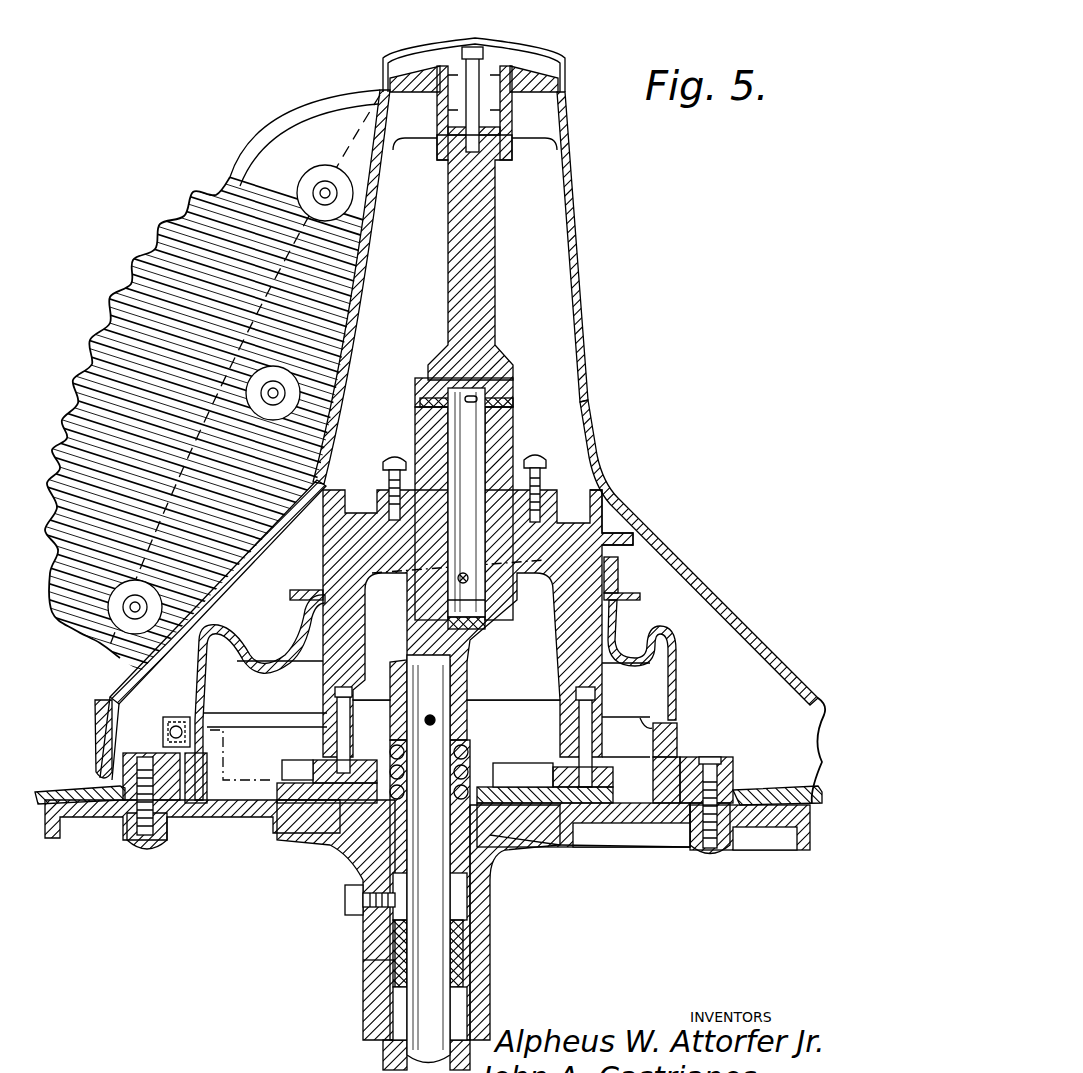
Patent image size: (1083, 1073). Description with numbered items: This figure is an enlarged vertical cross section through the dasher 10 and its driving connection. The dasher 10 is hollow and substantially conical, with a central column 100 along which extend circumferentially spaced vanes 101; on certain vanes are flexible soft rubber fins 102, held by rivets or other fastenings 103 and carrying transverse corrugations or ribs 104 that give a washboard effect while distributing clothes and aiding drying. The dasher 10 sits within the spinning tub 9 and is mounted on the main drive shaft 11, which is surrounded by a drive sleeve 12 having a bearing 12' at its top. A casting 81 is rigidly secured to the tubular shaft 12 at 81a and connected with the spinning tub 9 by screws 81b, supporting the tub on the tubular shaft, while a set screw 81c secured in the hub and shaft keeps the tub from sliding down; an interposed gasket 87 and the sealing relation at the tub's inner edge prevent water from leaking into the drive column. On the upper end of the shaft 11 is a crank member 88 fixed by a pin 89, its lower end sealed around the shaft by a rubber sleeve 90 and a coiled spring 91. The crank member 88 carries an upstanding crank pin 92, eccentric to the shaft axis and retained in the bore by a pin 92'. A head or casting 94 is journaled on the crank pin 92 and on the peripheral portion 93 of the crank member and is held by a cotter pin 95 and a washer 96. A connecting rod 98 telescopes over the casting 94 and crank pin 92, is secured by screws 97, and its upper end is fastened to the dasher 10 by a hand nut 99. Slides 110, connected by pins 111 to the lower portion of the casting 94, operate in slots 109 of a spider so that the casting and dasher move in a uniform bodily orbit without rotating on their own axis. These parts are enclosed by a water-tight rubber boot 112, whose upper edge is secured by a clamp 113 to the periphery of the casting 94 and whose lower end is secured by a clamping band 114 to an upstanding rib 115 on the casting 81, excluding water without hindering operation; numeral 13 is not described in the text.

The spinning tub 9 is at (48, 790).
The dasher 10 is at (748, 592).
The main drive shaft 11 is at (420, 850).
The drive sleeve 12 is at (297, 536).
The bearing 12' is at (357, 979).
The mounting bracket 13 is at (151, 684).
The casting 81 is at (490, 938).
The securing point of casting to tubular shaft 81a is at (470, 895).
The screws 81b is at (145, 755).
The set screw 81c is at (346, 906).
The gasket 87 is at (78, 822).
The crank member 88 is at (476, 701).
The pin 89 is at (472, 722).
The rubber sleeve 90 is at (480, 772).
The coiled spring 91 is at (492, 836).
The crank pin 92 is at (493, 508).
The pin 92' is at (571, 523).
The peripheral portion of crank member 93 is at (504, 595).
The head or casting 94 is at (555, 575).
The cotter pin 95 is at (486, 383).
The washer 96 is at (511, 403).
The screws 97 is at (539, 464).
The connecting rod 98 is at (497, 311).
The hand nut 99 is at (548, 58).
The central column 100 is at (361, 305).
The vanes 101 is at (112, 672).
The fins 102 is at (270, 130).
The rivets or fastenings 103 is at (330, 196).
The transverse corrugations or ribs 104 is at (160, 275).
The slots 109 is at (540, 840).
The slides 110 is at (312, 768).
The pins 111 is at (338, 731).
The boot or sleeve 112 is at (678, 683).
The clamp 113 is at (622, 583).
The clamping band 114 is at (679, 733).
The upstanding rib 115 is at (645, 722).